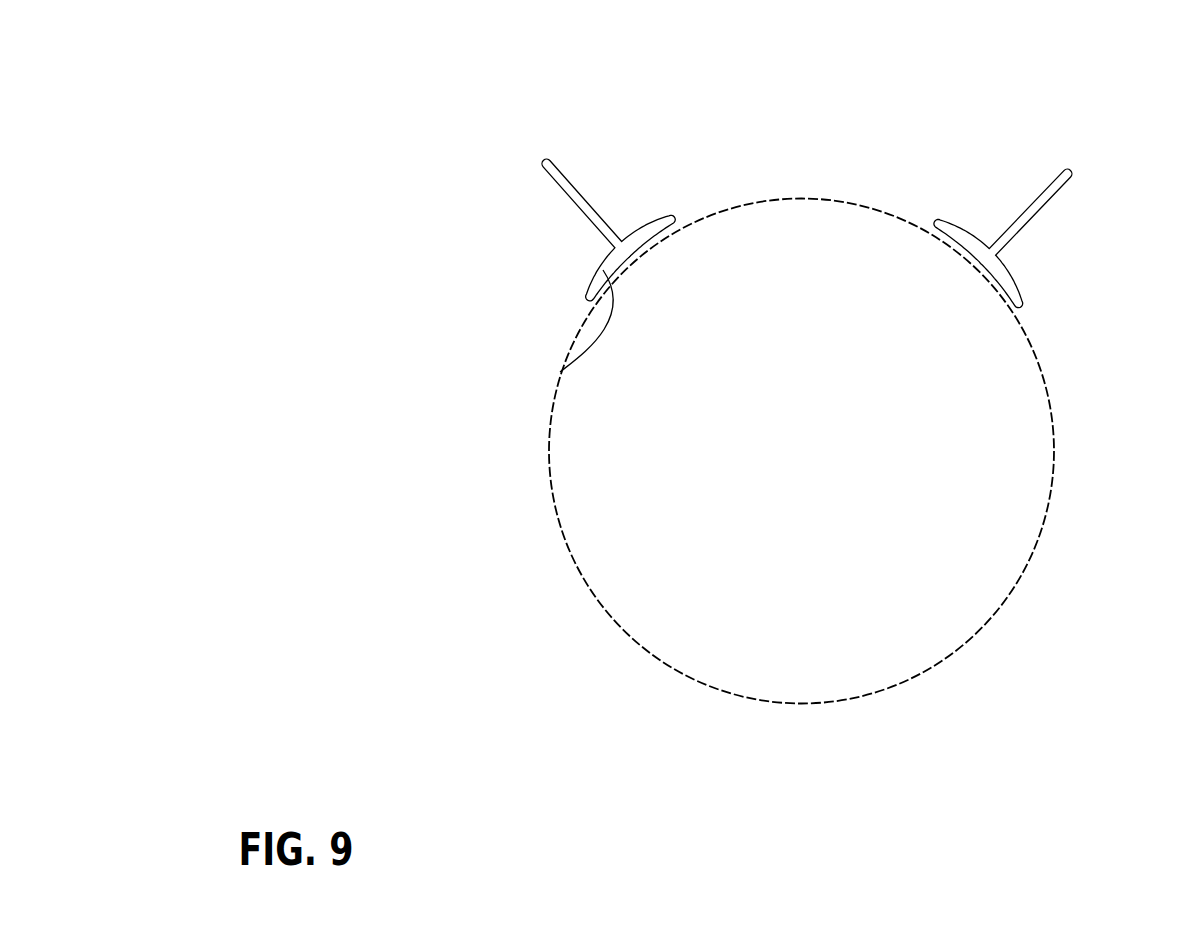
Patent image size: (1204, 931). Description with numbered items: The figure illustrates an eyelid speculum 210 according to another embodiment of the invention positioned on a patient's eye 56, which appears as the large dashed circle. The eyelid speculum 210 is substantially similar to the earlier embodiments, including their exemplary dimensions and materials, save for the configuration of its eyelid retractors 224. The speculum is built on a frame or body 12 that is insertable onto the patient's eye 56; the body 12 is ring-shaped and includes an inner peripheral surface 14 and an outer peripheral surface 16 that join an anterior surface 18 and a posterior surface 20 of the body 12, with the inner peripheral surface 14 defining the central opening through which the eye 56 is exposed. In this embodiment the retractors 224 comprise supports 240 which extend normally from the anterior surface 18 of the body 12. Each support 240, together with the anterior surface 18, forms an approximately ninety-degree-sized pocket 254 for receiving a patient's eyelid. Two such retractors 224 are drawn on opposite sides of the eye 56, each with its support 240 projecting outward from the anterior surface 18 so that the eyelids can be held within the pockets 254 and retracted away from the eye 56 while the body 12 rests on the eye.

The eyelid speculum 210 is at (468, 78).
The patient's eye 56 is at (793, 429).
The body 12 is at (960, 211).
The inner peripheral surface 14 is at (674, 215).
The outer peripheral surface 16 is at (585, 304).
The anterior surface 18 is at (597, 258).
The posterior surface 20 is at (560, 372).
The eyelid retractors 224 is at (556, 197).
The supports 240 is at (567, 168).
The pocket 254 is at (590, 233).